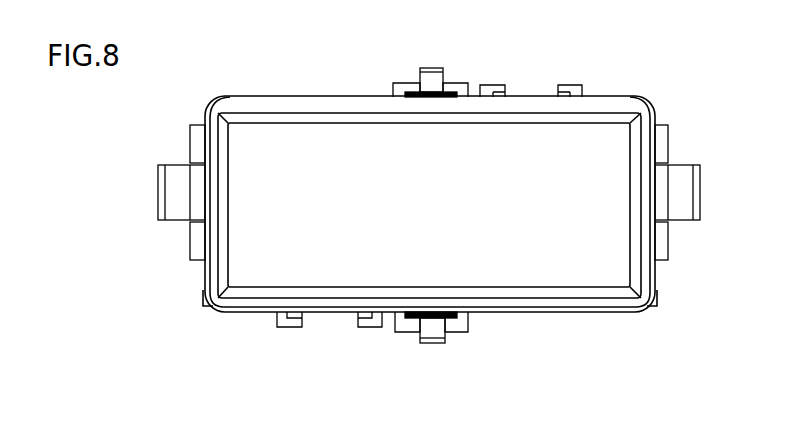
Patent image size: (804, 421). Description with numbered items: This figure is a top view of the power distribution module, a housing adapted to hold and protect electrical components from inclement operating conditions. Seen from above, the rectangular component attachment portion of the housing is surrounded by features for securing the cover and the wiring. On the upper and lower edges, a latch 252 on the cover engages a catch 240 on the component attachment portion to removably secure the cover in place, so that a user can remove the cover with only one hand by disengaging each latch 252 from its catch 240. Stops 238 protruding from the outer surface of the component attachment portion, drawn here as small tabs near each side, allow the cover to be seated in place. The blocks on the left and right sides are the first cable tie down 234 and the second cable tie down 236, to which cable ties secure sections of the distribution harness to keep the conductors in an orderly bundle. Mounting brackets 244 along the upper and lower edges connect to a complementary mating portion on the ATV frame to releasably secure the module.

The first cable tie down 234 is at (162, 198).
The second cable tie down 236 is at (698, 183).
The stops 238 is at (195, 132).
The catch 240 is at (458, 83).
The mounting brackets 244 is at (568, 85).
The latch 252 is at (430, 70).